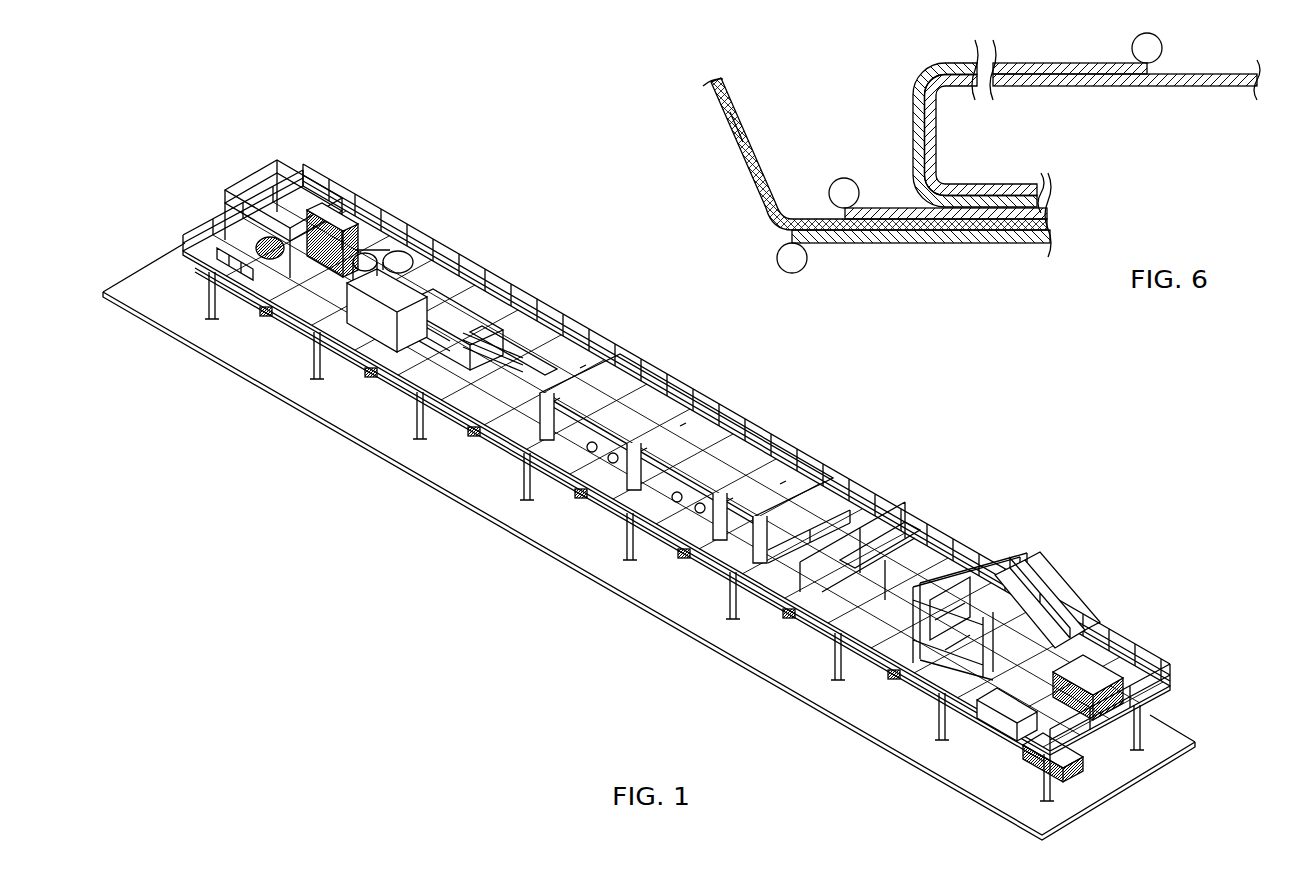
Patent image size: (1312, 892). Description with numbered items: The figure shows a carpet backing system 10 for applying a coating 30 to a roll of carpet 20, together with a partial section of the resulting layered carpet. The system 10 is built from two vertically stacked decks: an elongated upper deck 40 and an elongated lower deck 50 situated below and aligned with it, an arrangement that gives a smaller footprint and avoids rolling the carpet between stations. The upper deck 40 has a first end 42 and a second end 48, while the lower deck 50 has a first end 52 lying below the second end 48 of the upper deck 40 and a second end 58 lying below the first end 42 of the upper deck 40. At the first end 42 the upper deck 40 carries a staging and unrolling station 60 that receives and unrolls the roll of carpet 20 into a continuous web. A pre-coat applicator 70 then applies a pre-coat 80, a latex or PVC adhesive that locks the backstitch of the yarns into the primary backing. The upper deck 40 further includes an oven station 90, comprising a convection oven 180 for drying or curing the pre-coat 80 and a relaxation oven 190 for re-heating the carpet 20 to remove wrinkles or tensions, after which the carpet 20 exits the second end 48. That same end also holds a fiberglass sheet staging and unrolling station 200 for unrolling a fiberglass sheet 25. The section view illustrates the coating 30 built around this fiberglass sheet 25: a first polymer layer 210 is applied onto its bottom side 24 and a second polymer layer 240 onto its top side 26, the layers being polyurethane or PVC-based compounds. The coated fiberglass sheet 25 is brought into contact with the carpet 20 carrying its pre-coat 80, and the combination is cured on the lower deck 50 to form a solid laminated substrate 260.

In FIG. 1, the carpet backing system 10 is at (653, 496).
In FIG. 1, the carpet 20 is at (530, 362).
In FIG. 6, the carpet 20 is at (990, 192).
In FIG. 6, the bottom side 24 is at (857, 154).
In FIG. 6, the fiberglass sheet 25 is at (727, 110).
In FIG. 6, the top side 26 is at (752, 147).
In FIG. 6, the coating 30 is at (964, 168).
In FIG. 1, the upper deck 40 is at (868, 527).
In FIG. 1, the first end 42 is at (1110, 656).
In FIG. 1, the second end 48 is at (212, 250).
In FIG. 1, the lower deck 50 is at (590, 550).
In FIG. 1, the first end 52 is at (242, 328).
In FIG. 1, the second end 58 is at (1000, 750).
In FIG. 1, the staging and unrolling station 60 is at (1058, 622).
In FIG. 1, the pre-coat applicator 70 is at (982, 545).
In FIG. 6, the pre-coat 80 is at (1065, 67).
In FIG. 1, the oven station 90 is at (668, 284).
In FIG. 1, the convection oven 180 is at (713, 460).
In FIG. 1, the relaxation oven 190 is at (413, 307).
In FIG. 1, the fiberglass sheet staging and unrolling station 200 is at (372, 182).
In FIG. 6, the first polymer layer 210 is at (845, 245).
In FIG. 6, the second polymer layer 240 is at (895, 207).
In FIG. 6, the laminated substrate 260 is at (910, 259).